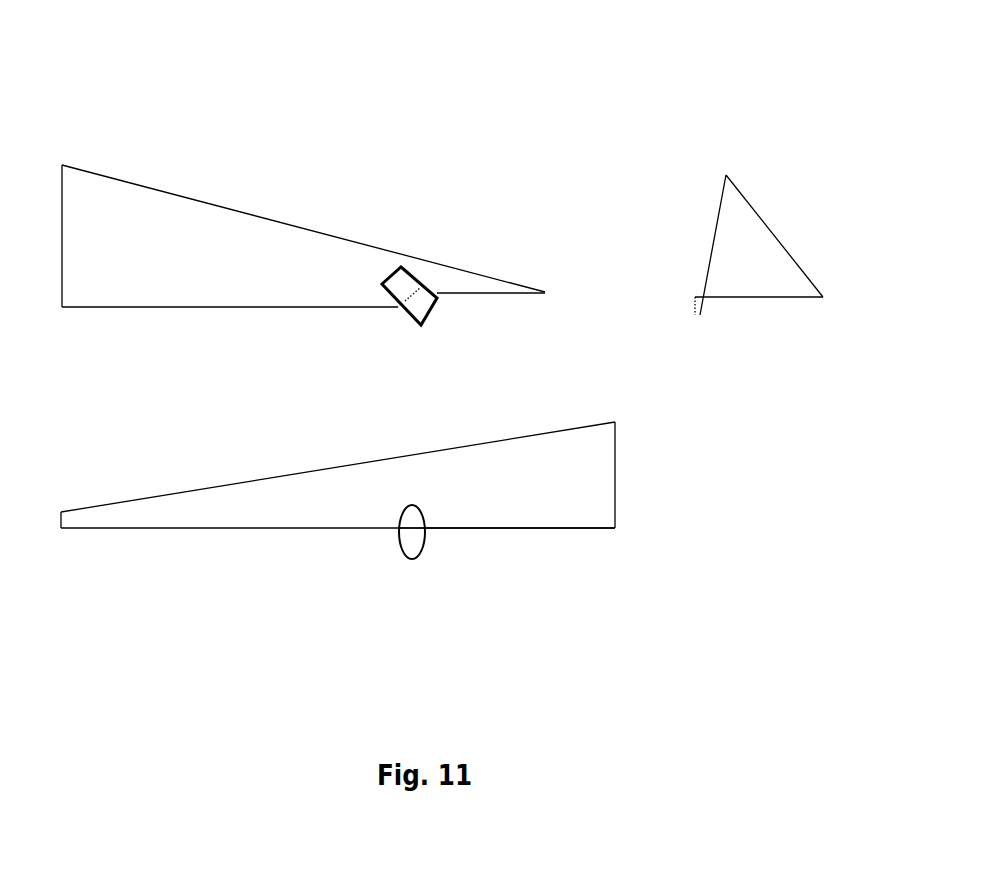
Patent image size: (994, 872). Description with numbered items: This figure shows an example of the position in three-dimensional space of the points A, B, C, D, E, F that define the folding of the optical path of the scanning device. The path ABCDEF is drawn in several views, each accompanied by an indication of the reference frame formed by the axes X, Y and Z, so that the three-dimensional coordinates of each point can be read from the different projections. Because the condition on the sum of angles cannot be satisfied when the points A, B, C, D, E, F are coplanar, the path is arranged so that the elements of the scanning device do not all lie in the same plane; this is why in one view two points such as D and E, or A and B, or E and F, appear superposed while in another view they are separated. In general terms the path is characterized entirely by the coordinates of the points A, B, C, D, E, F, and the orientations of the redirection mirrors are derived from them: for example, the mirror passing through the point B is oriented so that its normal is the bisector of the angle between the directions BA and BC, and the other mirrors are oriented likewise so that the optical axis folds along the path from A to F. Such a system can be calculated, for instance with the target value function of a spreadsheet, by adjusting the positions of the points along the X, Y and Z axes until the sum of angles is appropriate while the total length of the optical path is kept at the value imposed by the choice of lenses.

The point A is at (540, 413).
The point B is at (327, 427).
The point C is at (436, 334).
The point D is at (693, 405).
The point E is at (553, 400).
The point F is at (422, 415).
The X axis X is at (141, 161).
The Y axis Y is at (287, 143).
The Z axis Z is at (283, 148).